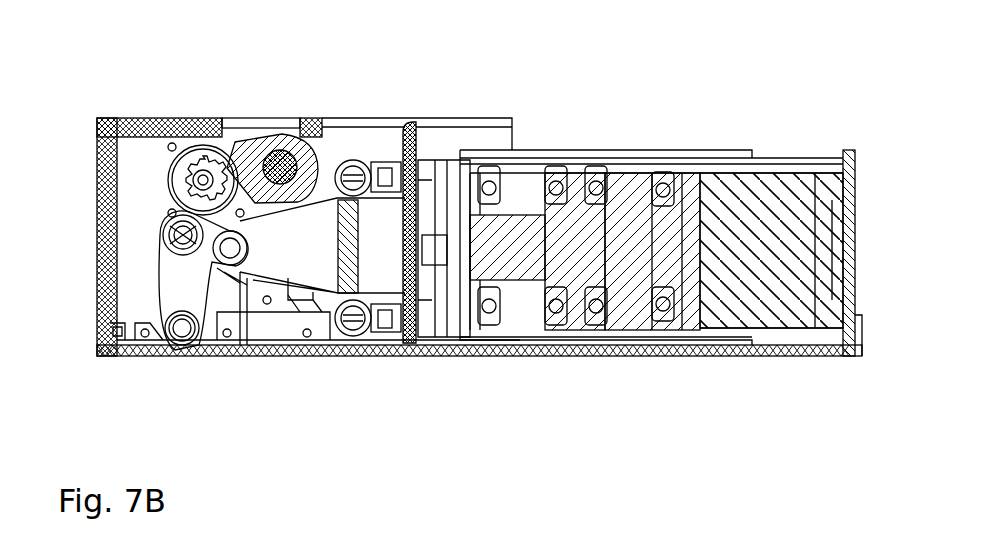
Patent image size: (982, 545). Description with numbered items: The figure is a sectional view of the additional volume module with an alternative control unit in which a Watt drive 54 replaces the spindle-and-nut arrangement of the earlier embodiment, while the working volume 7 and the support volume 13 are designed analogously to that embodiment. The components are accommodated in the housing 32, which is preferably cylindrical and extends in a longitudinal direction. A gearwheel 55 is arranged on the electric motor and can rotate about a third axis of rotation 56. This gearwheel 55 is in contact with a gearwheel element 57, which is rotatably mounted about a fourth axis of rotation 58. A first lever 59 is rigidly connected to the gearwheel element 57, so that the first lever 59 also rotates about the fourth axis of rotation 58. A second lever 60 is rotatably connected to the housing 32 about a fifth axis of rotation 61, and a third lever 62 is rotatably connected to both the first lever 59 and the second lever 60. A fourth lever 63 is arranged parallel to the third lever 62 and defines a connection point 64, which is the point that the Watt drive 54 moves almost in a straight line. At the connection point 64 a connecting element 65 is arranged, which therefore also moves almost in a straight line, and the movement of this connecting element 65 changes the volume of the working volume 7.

The working volume 7 is at (456, 342).
The support volume 13 is at (765, 192).
The housing 32 is at (118, 118).
The Watt drive 54 is at (160, 76).
The gearwheel 55 is at (190, 165).
The third axis of rotation 56 is at (168, 192).
The gearwheel element 57 is at (242, 150).
The fourth axis of rotation 58 is at (281, 150).
The first lever 59 is at (318, 150).
The second lever 60 is at (167, 280).
The fifth axis of rotation 61 is at (186, 340).
The third lever 62 is at (267, 306).
The fourth lever 63 is at (213, 348).
The connection point 64 is at (239, 275).
The connecting element 65 is at (313, 290).